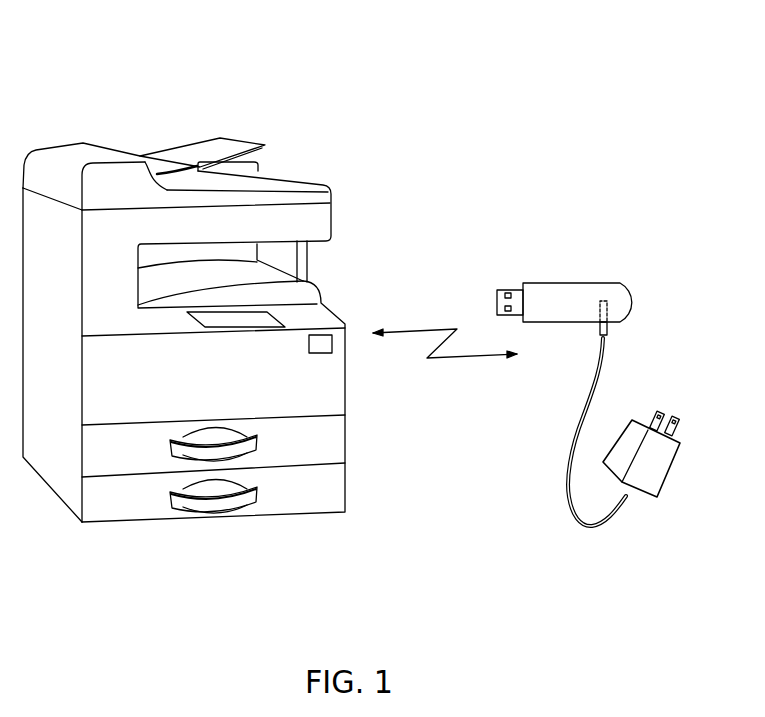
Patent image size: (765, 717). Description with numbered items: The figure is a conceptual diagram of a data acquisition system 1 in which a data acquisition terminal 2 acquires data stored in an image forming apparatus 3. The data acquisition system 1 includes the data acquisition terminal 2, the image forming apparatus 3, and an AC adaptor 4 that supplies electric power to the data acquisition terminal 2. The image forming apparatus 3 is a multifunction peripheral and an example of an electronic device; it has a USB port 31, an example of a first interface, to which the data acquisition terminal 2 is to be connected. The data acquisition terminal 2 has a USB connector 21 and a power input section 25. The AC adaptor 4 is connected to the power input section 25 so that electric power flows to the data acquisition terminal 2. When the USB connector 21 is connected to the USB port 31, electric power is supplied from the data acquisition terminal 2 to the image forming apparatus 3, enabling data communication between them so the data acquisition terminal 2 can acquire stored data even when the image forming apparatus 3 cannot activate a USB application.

The data acquisition system 1 is at (490, 88).
The data acquisition terminal 2 is at (562, 276).
The image forming apparatus 3 is at (205, 281).
The AC adaptor 4 is at (653, 475).
The USB connector 21 is at (516, 293).
The power input section 25 is at (596, 312).
The USB port 31 is at (320, 353).